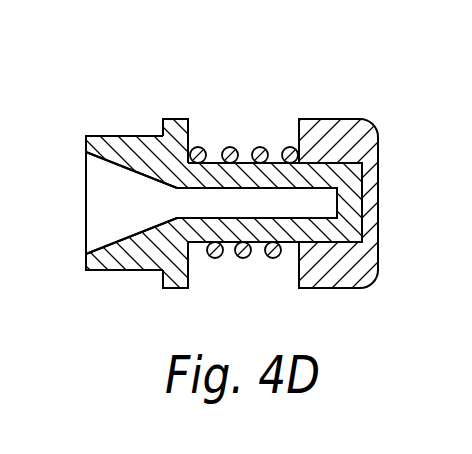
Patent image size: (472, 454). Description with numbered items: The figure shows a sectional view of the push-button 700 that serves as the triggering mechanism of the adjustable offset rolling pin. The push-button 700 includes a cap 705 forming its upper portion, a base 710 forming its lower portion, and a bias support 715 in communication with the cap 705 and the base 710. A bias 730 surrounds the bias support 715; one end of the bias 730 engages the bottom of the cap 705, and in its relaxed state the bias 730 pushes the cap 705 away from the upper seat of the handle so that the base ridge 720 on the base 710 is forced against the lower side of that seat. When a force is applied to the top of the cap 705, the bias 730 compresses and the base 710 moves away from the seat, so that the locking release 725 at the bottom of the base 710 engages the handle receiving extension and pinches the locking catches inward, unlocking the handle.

The push-button 700 is at (373, 118).
The cap 705 is at (378, 187).
The base 710 is at (131, 272).
The bias support 715 is at (244, 163).
The base ridge 720 is at (172, 119).
The locking release 725 is at (145, 175).
The bias 730 is at (252, 257).